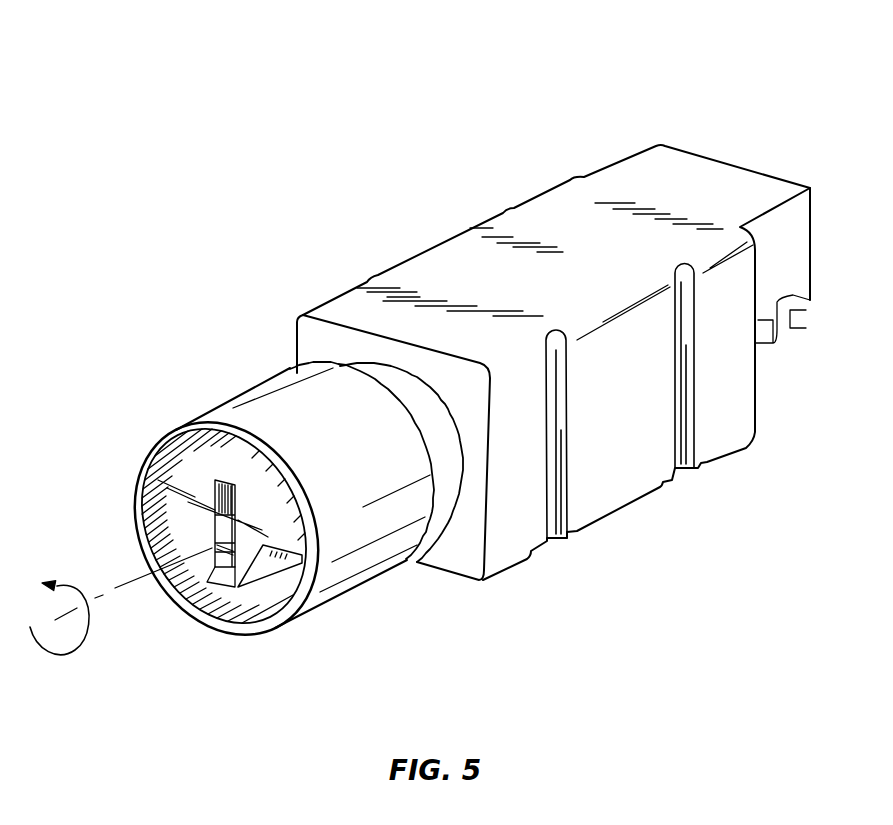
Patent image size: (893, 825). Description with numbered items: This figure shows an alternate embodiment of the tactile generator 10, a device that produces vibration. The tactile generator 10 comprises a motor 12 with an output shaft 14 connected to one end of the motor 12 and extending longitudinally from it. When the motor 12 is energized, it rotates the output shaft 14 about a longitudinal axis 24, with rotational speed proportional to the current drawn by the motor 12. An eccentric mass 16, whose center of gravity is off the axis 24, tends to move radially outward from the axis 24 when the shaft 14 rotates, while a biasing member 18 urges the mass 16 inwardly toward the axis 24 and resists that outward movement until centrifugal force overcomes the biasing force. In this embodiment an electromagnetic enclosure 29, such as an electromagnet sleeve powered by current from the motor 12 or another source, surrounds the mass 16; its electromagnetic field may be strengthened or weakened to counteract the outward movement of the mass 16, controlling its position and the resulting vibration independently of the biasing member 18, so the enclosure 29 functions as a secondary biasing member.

The tactile generator 10 is at (437, 350).
The motor 12 is at (578, 225).
The electromagnetic enclosure 29 is at (273, 405).
The eccentric mass 16 is at (192, 477).
The output shaft 14 is at (216, 527).
The biasing member 18 is at (224, 545).
The longitudinal axis 24 is at (127, 577).